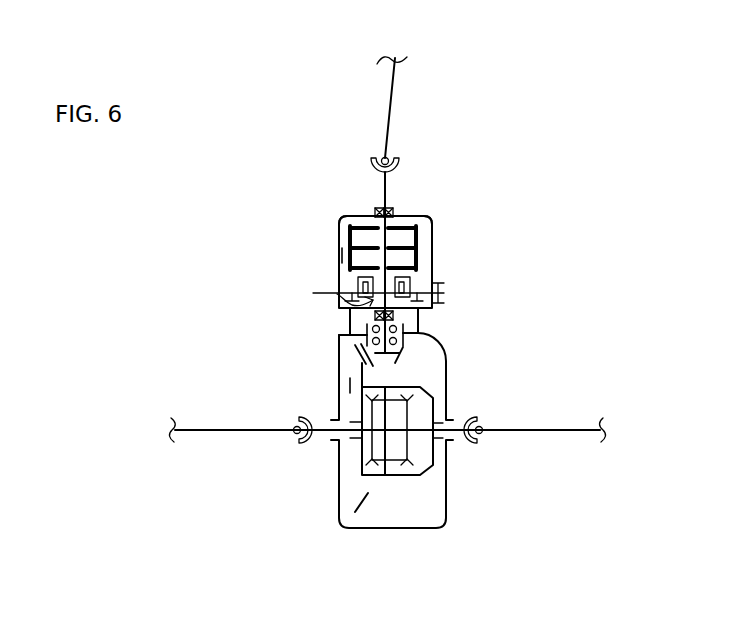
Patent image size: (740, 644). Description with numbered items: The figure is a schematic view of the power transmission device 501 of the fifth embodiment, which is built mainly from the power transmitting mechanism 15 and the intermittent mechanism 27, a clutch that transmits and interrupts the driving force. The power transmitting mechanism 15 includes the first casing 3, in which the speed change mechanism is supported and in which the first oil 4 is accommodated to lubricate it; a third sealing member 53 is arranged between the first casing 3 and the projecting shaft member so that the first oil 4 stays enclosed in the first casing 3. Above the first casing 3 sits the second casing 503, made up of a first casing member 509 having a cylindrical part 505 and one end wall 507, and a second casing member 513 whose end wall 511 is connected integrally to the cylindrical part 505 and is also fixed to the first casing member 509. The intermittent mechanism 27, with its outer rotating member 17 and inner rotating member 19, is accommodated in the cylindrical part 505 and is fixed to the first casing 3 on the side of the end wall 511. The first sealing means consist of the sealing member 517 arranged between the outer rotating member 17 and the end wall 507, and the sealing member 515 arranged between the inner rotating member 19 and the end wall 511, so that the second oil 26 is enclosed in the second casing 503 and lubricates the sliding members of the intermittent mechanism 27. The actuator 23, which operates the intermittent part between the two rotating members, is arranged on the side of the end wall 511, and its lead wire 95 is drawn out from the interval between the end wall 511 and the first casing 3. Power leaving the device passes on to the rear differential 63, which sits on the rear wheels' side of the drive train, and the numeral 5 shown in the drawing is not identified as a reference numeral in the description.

The power transmission device 501 is at (498, 130).
The intermittent mechanism 27 is at (545, 243).
The second casing 503 is at (435, 236).
The end wall 507 is at (417, 214).
The first casing member 509 is at (340, 214).
The sealing member 515 is at (380, 207).
The sealing member 517 is at (388, 285).
The outer rotating member 17 is at (339, 248).
The cylindrical part 505 is at (341, 256).
The second oil 26 is at (339, 263).
The inner rotating member 19 is at (340, 266).
The lead wire 95 is at (313, 293).
The actuator 23 is at (414, 280).
The third sealing member 53 is at (370, 306).
The second casing member 513 is at (350, 310).
The end wall 511 is at (418, 311).
The first casing 3 is at (410, 338).
The first oil 4 is at (350, 386).
The gear housing 5 is at (449, 510).
The power transmitting mechanism 15 is at (323, 391).
The rear differential 63 is at (398, 490).